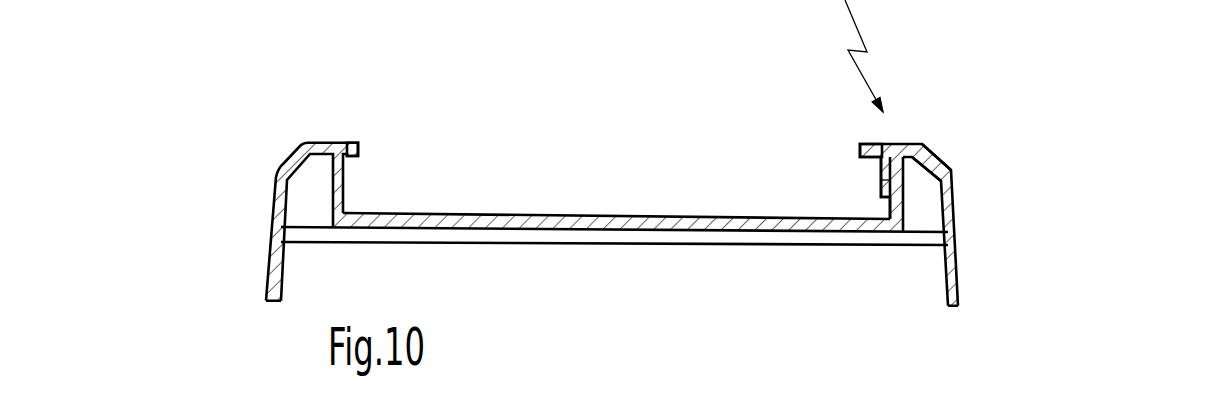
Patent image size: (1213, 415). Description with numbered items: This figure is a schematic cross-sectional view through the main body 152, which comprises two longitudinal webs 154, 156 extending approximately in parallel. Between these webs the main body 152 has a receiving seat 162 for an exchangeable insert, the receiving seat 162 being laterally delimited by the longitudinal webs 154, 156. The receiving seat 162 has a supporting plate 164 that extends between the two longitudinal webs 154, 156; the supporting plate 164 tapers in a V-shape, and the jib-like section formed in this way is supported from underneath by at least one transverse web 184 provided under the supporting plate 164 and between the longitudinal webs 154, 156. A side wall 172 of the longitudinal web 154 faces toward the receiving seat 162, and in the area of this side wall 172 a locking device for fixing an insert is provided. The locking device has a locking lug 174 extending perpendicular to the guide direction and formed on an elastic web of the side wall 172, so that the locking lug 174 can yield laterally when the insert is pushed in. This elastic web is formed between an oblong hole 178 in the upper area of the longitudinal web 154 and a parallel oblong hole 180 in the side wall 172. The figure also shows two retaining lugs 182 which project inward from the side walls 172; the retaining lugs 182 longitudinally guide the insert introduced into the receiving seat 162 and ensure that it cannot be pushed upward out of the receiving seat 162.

The main body 152 is at (699, 169).
The longitudinal web 154 is at (951, 187).
The longitudinal web 156 is at (283, 167).
The receiving seat 162 is at (612, 196).
The supporting plate 164 is at (578, 222).
The side wall 172 is at (880, 185).
The locking lug 174 is at (880, 170).
The oblong hole 178 is at (913, 147).
The oblong hole 180 is at (898, 207).
The retaining lug 182 is at (357, 141).
The transverse web 184 is at (813, 238).